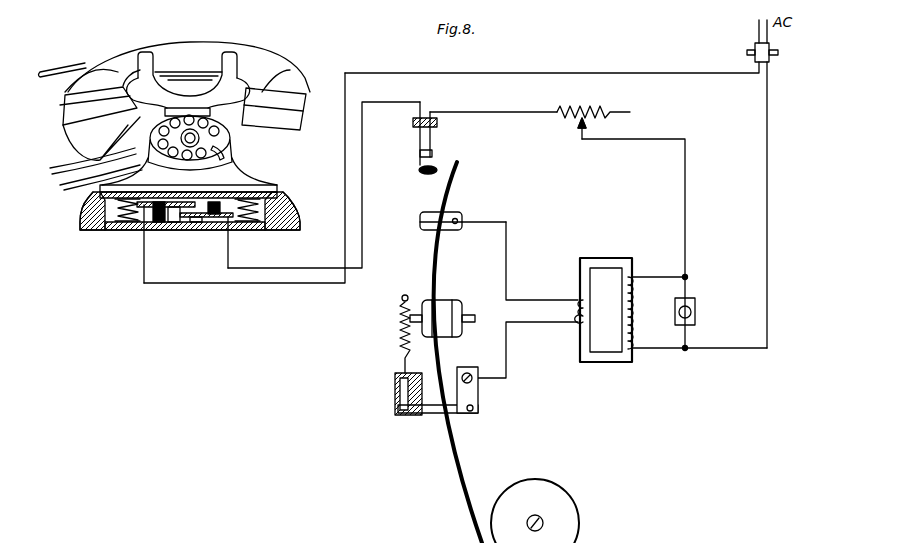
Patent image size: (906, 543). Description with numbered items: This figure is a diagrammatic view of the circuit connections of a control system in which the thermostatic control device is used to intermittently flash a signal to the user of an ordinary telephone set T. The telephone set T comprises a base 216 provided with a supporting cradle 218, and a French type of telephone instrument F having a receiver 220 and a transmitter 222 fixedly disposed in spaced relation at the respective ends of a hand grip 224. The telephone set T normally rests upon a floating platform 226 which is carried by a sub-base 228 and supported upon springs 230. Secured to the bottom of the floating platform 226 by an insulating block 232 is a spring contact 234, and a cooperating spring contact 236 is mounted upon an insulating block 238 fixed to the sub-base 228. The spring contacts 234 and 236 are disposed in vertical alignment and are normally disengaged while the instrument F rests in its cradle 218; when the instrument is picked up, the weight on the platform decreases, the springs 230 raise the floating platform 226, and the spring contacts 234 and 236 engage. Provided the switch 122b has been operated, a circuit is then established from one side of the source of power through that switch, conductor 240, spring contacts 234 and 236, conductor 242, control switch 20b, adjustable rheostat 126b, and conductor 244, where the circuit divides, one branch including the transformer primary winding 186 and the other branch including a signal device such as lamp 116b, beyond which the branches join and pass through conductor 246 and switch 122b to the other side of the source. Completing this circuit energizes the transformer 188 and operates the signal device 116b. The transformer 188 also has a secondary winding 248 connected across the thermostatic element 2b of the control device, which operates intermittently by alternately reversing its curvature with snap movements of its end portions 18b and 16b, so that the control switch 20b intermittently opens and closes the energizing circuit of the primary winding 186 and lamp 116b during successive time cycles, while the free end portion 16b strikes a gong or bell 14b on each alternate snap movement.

The thermostatic element 2b is at (446, 262).
The gong or bell 14b is at (580, 530).
The free end portion of the thermostatic element 16b is at (460, 470).
The end portion of the thermostatic element 18b is at (460, 188).
The control switch 20b is at (485, 130).
The signal device (lamp) 116b is at (696, 312).
The switch 122b is at (755, 56).
The adjustable rheostat 126b is at (598, 107).
The transformer primary winding 186 is at (636, 312).
The transformer 188 is at (611, 254).
The base 216 is at (268, 177).
The supporting cradle 218 is at (228, 70).
The receiver 220 is at (297, 112).
The transmitter 222 is at (65, 122).
The hand grip 224 is at (176, 47).
The floating platform 226 is at (278, 180).
The sub-base 228 is at (301, 230).
The springs 230 is at (102, 224).
The insulating block 232 is at (213, 204).
The spring contact 234 is at (198, 222).
The spring contact 236 is at (176, 204).
The insulating block 238 is at (150, 230).
The conductor 240 is at (604, 73).
The conductor 242 is at (276, 284).
The conductor 244 is at (685, 185).
The conductor 246 is at (767, 218).
The secondary winding 248 is at (577, 330).
The French type telephone instrument F is at (200, 48).
The telephone set T is at (238, 157).